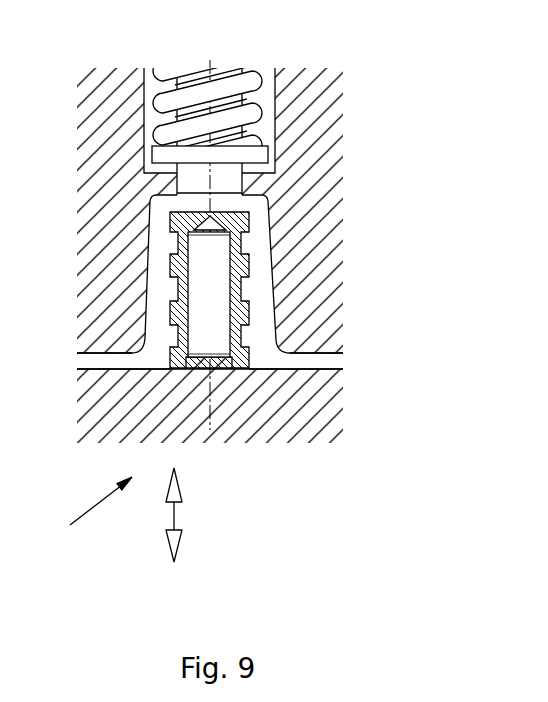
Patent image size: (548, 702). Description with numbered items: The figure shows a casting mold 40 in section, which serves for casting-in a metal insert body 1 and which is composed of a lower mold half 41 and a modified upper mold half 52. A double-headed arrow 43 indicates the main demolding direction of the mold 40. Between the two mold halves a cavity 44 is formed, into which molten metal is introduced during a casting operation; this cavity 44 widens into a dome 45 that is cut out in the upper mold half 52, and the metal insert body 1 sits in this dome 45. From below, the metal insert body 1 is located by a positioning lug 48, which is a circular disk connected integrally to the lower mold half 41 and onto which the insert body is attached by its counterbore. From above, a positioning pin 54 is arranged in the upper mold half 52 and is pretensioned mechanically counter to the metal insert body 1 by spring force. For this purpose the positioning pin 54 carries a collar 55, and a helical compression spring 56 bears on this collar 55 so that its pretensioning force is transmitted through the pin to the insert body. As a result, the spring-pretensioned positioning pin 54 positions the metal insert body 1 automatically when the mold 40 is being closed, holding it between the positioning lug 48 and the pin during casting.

The metal insert body 1 is at (241, 268).
The casting mold 40 is at (87, 514).
The lower mold half 41 is at (100, 428).
The double-headed arrow 43 is at (174, 507).
The cavity 44 is at (328, 363).
The dome 45 is at (160, 292).
The positioning lug 48 is at (195, 369).
The upper mold half 52 is at (125, 88).
The positioning pin 54 is at (228, 183).
The collar 55 is at (232, 154).
The helical compression spring 56 is at (173, 99).